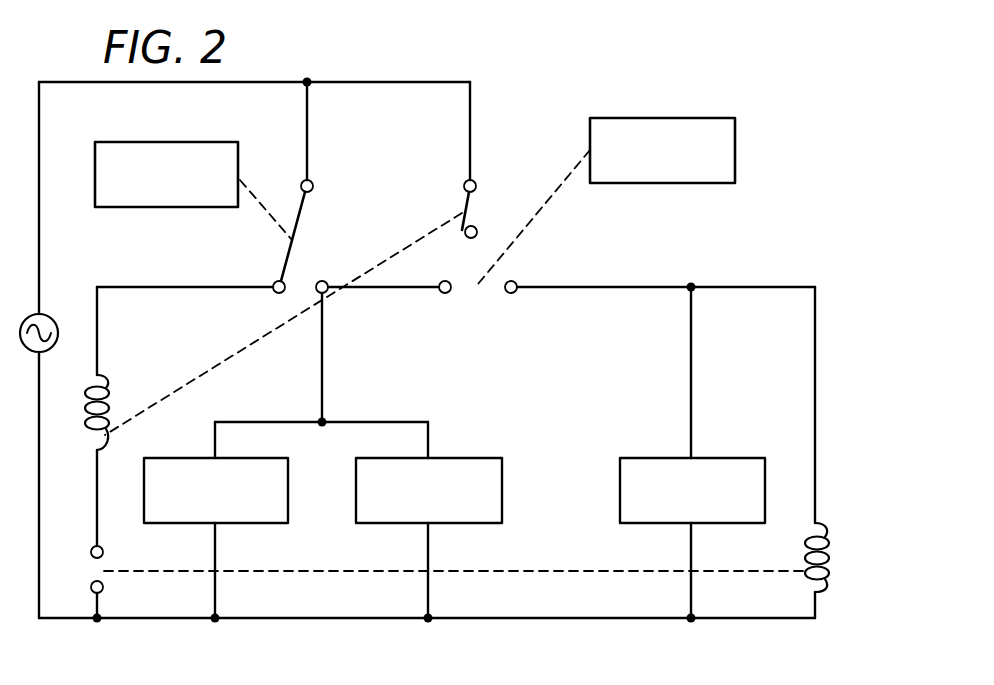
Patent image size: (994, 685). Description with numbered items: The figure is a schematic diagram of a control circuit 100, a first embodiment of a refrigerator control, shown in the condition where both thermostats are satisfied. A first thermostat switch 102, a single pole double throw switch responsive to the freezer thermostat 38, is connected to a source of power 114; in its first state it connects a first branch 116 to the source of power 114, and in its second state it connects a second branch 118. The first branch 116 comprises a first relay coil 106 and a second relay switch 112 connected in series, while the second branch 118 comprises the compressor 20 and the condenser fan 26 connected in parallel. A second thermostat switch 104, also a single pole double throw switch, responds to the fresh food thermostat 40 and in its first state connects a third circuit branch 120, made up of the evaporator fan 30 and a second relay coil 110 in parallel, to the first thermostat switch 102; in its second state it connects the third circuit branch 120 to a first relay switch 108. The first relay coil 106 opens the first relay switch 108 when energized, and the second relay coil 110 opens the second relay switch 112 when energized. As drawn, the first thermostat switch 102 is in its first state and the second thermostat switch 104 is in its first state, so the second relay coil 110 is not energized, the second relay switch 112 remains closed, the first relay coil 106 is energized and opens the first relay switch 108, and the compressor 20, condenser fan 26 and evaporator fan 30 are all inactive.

The control circuit 100 is at (548, 97).
The first thermostat switch 102 is at (297, 234).
The second thermostat switch 104 is at (478, 293).
The first relay coil 106 is at (103, 378).
The first relay switch 108 is at (476, 205).
The second relay coil 110 is at (819, 594).
The second relay switch 112 is at (96, 569).
The source of power 114 is at (45, 311).
The first branch 116 is at (177, 278).
The second branch 118 is at (333, 375).
The third circuit branch 120 is at (648, 277).
The compressor 20 is at (193, 457).
The condenser fan 26 is at (477, 457).
The evaporator fan 30 is at (745, 453).
The freezer thermostat 38 is at (110, 207).
The fresh food thermostat 40 is at (695, 183).